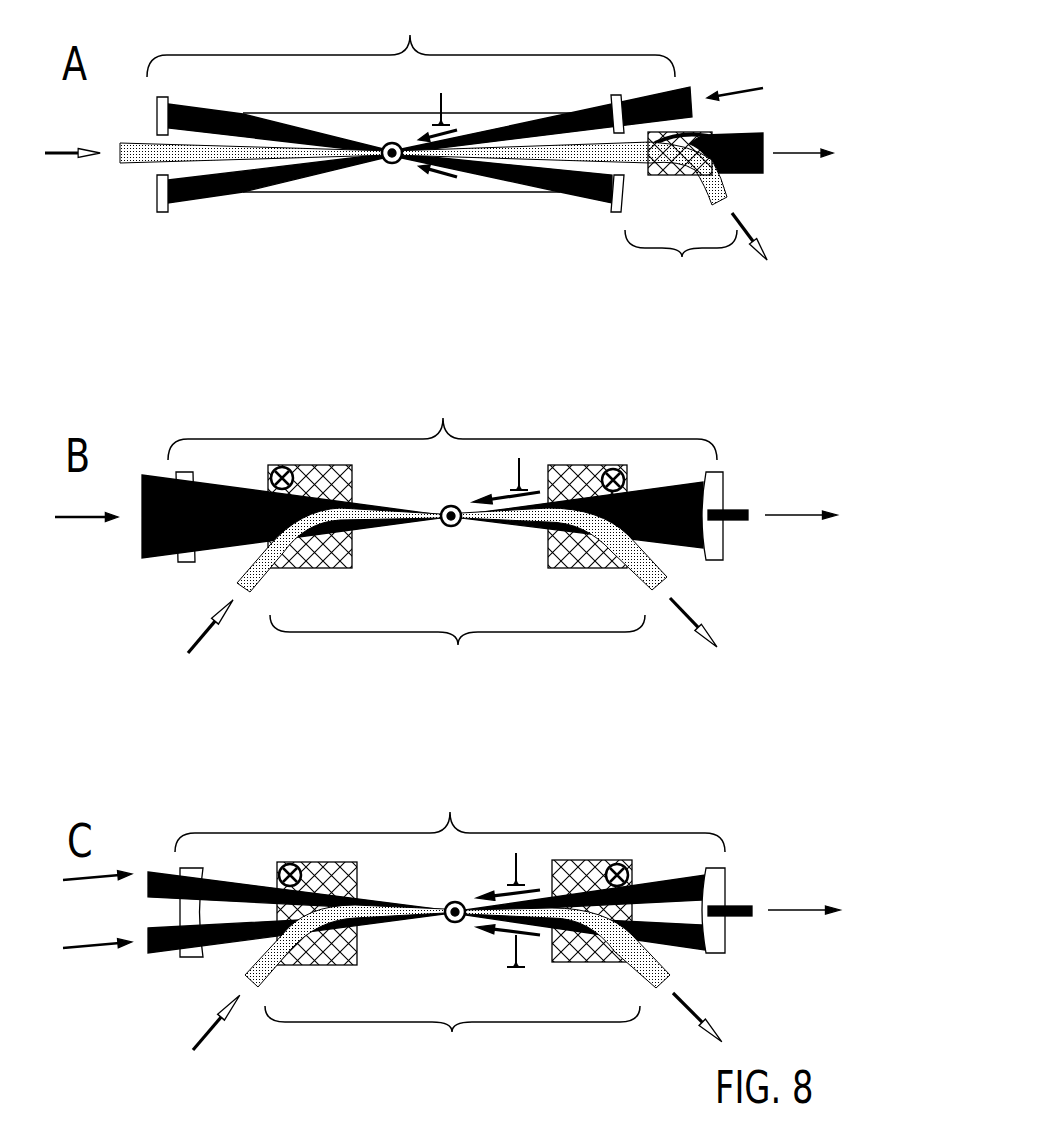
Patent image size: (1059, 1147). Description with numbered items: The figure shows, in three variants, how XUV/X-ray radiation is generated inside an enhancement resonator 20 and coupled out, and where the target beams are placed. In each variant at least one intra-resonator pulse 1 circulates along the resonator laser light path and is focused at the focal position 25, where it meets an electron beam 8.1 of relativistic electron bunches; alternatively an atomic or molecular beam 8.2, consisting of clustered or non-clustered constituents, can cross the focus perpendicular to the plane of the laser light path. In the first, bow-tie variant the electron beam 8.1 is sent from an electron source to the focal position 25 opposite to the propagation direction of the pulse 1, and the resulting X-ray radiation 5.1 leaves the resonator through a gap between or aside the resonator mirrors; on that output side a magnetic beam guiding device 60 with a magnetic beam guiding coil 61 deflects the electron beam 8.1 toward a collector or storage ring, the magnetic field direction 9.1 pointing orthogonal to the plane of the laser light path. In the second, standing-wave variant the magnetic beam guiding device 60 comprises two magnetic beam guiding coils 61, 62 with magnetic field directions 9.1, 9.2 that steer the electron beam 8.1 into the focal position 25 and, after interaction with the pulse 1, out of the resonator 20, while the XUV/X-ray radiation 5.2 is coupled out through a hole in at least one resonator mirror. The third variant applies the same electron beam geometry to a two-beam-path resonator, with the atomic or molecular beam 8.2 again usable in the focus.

In FIG. 8A, the intra-resonator pulse 1 is at (436, 135).
In FIG. 8B, the intra-resonator pulse 1 is at (495, 497).
In FIG. 8C, the intra-resonator pulse 1 is at (497, 893).
In FIG. 8A, the enhancement resonator 20 is at (424, 25).
In FIG. 8B, the enhancement resonator 20 is at (458, 409).
In FIG. 8C, the enhancement resonator 20 is at (463, 801).
In FIG. 8A, the focal position 25 is at (384, 148).
In FIG. 8B, the focal position 25 is at (445, 510).
In FIG. 8C, the focal position 25 is at (449, 905).
In FIG. 8A, the X-ray radiation 5.1 is at (761, 145).
In FIG. 8B, the XUV/X-ray radiation 5.2 is at (772, 496).
In FIG. 8C, the XUV/X-ray radiation 5.2 is at (774, 894).
In FIG. 8A, the electron beam 8.1 is at (141, 155).
In FIG. 8B, the electron beam 8.1 is at (202, 636).
In FIG. 8C, the electron beam 8.1 is at (206, 1030).
In FIG. 8A, the atomic or molecular beam 8.2 is at (390, 162).
In FIG. 8B, the atomic or molecular beam 8.2 is at (446, 524).
In FIG. 8C, the atomic or molecular beam 8.2 is at (450, 920).
In FIG. 8B, the magnetic field direction 9.1 is at (276, 468).
In FIG. 8C, the magnetic field direction 9.1 is at (282, 865).
In FIG. 8A, the magnetic field direction 9.2 is at (722, 133).
In FIG. 8B, the magnetic field direction 9.2 is at (624, 470).
In FIG. 8C, the magnetic field direction 9.2 is at (630, 868).
In FIG. 8A, the magnetic beam guiding device 60 is at (706, 217).
In FIG. 8B, the magnetic beam guiding device 60 is at (452, 577).
In FIG. 8C, the magnetic beam guiding device 60 is at (457, 967).
In FIG. 8A, the magnetic beam guiding coil 61 is at (714, 174).
In FIG. 8B, the magnetic beam guiding coil 61 is at (342, 548).
In FIG. 8C, the magnetic beam guiding coil 61 is at (348, 950).
In FIG. 8B, the magnetic beam guiding coil 62 is at (558, 548).
In FIG. 8C, the magnetic beam guiding coil 62 is at (565, 945).